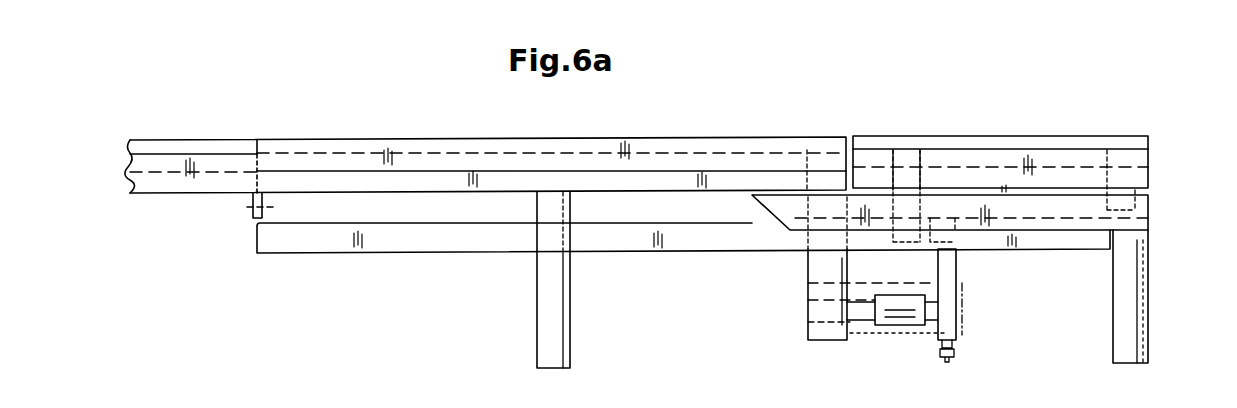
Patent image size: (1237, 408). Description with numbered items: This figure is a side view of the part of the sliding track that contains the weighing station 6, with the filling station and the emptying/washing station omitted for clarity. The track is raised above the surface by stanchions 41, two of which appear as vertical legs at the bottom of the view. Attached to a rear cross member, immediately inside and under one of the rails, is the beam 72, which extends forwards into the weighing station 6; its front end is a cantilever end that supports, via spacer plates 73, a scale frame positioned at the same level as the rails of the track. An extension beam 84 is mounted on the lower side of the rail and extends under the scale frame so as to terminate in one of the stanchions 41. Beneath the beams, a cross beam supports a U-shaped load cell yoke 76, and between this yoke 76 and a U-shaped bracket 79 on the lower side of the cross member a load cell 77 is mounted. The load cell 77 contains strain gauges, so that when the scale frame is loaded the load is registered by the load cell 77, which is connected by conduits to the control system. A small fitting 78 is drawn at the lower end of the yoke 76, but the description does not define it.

The weighing station 6 is at (1013, 136).
The spacer plates 73 is at (908, 182).
The extension beam 84 is at (1078, 204).
The beam 72 is at (419, 241).
The stanchions 41 is at (566, 327).
The U-shaped bracket 79 is at (820, 263).
The load cell 77 is at (900, 322).
The U-shaped load cell yoke 76 is at (956, 262).
The fitting 78 is at (953, 352).